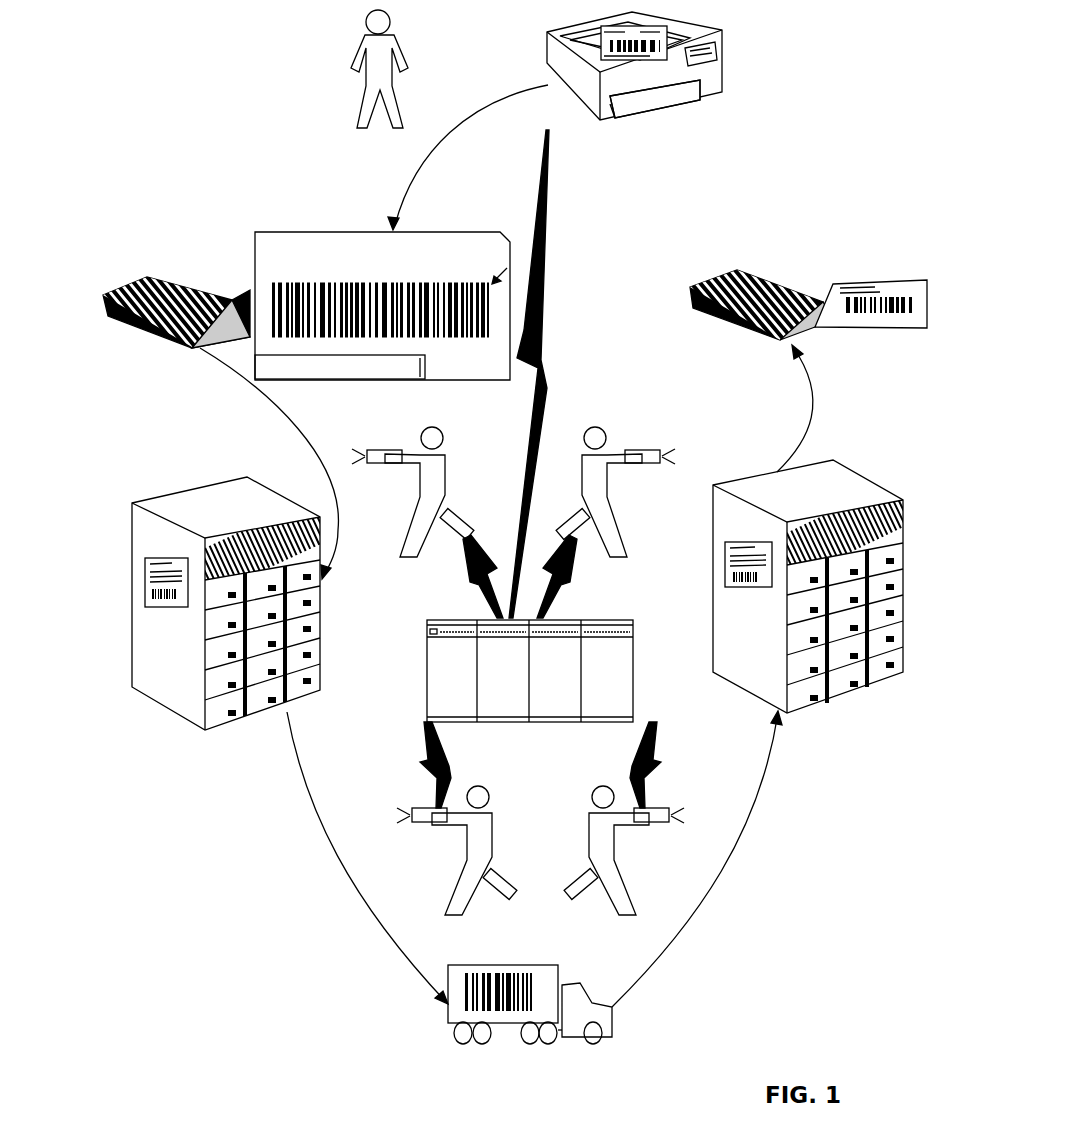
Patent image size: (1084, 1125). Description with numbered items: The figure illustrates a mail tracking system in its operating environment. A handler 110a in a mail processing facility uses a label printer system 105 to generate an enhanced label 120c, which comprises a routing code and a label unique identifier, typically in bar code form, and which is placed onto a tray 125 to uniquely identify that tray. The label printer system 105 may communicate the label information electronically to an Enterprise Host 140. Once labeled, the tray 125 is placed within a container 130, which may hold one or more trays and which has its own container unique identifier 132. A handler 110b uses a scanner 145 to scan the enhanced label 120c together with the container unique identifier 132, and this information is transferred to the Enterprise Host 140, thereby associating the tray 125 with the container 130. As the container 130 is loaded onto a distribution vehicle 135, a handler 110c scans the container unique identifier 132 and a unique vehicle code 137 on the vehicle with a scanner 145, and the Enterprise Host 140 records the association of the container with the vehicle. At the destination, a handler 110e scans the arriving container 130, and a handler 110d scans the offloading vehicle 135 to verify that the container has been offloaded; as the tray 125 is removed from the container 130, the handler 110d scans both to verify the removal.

The label printer system 105 is at (547, 42).
The handler 110a is at (394, 38).
The handler 110b is at (446, 455).
The handler 110c is at (492, 814).
The handler 110d is at (590, 812).
The handler 110e is at (594, 427).
The enhanced label 120c is at (452, 230).
The tray 125 is at (118, 293).
The container 130 is at (131, 528).
The container unique identifier 132 is at (141, 568).
The distribution vehicle 135 is at (440, 1012).
The unique vehicle code 137 is at (498, 1020).
The Enterprise Host 140 is at (635, 669).
The scanner 145 is at (377, 450).